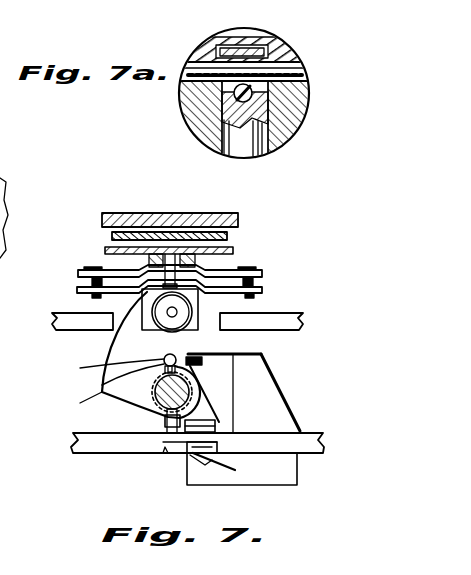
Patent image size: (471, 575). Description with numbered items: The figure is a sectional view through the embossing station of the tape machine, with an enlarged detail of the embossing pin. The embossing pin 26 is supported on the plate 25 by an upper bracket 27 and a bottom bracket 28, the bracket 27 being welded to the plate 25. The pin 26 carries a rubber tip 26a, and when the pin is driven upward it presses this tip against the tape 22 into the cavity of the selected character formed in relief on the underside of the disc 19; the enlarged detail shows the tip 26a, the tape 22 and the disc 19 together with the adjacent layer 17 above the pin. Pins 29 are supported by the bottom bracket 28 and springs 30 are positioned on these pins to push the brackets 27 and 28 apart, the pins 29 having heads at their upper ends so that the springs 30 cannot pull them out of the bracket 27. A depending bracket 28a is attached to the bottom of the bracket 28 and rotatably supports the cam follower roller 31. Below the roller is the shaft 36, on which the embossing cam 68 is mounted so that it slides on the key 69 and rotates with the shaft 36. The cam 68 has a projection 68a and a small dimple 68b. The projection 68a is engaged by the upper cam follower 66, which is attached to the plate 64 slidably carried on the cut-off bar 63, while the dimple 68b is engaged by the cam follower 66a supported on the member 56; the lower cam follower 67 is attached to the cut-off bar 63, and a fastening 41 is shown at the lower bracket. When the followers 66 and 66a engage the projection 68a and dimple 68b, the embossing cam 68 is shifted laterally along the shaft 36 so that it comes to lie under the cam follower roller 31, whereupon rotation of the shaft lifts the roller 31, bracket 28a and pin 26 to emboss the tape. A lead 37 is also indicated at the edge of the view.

In FIG. 7A, the upper plate 17 is at (245, 49).
In FIG. 7, the upper plate 17 is at (215, 213).
In FIG. 7A, the disc 19 is at (246, 72).
In FIG. 7, the disc 19 is at (230, 236).
In FIG. 7A, the tape 22 is at (201, 68).
In FIG. 7, the plate 25 is at (105, 251).
In FIG. 7A, the embossing pin 26 is at (240, 151).
In FIG. 7, the embossing pin 26 is at (170, 262).
In FIG. 7A, the rubber tip 26a is at (256, 84).
In FIG. 7, the bracket 27 is at (262, 274).
In FIG. 7, the bracket 28 is at (77, 290).
In FIG. 7, the depending bracket 28a is at (100, 337).
In FIG. 7, the pins 29 is at (86, 268).
In FIG. 7, the springs 30 is at (92, 282).
In FIG. 7, the cam follower roller 31 is at (190, 331).
In FIG. 7, the shaft 36 is at (100, 401).
In FIG. 7, the wire 37 is at (0, 176).
In FIG. 7, the bolt 41 is at (205, 452).
In FIG. 7, the member 56 is at (268, 379).
In FIG. 7, the cut-off bar 63 is at (95, 455).
In FIG. 7, the plate 64 is at (270, 430).
In FIG. 7, the upper cam follower 66 is at (190, 412).
In FIG. 7, the cam follower 66a is at (192, 386).
In FIG. 7, the lower cam follower 67 is at (187, 453).
In FIG. 7, the embossing cam 68 is at (102, 398).
In FIG. 7, the projection 68a is at (163, 423).
In FIG. 7, the dimple 68b is at (100, 366).
In FIG. 7, the key 69 is at (107, 378).